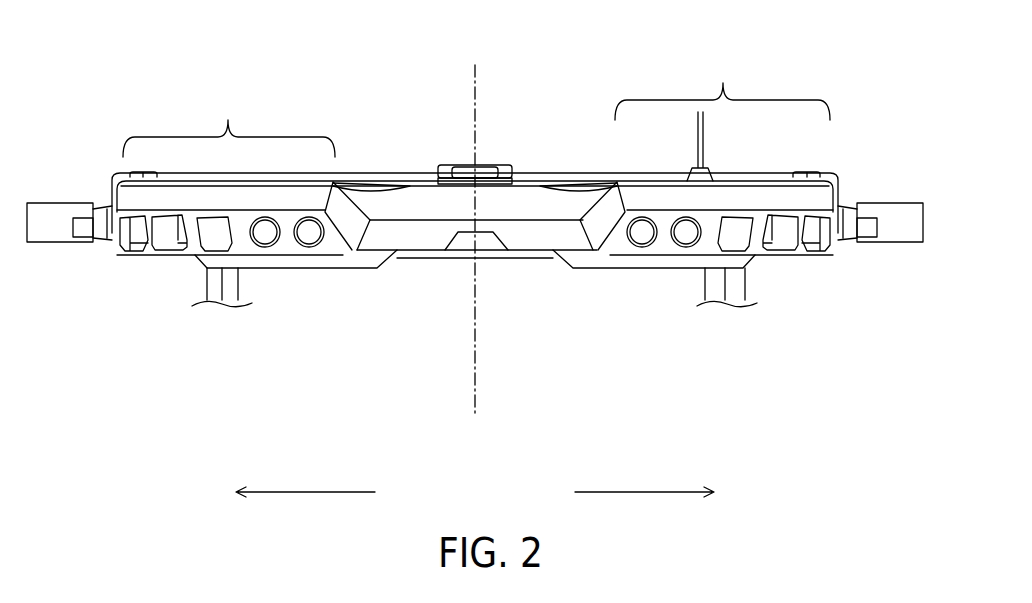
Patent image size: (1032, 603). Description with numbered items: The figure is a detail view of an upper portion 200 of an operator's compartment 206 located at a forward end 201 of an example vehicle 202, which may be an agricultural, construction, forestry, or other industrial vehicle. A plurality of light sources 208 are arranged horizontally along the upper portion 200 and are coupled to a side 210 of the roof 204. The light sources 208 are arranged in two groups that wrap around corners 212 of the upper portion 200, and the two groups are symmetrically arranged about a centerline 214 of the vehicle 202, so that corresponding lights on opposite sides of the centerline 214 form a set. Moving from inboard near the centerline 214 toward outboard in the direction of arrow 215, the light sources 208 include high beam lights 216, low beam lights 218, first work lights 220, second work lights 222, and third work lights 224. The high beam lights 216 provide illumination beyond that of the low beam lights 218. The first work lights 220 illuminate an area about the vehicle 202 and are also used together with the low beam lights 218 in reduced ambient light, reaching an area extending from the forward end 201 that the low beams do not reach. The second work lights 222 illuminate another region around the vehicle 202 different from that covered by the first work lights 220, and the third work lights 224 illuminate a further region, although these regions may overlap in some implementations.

The upper portion 200 is at (535, 177).
The forward end 201 is at (205, 283).
The vehicle 202 is at (130, 113).
The roof 204 is at (410, 175).
The operator's compartment 206 is at (417, 335).
The light sources 208 is at (476, 115).
The side 210 is at (395, 200).
The corners 212 is at (110, 183).
The centerline 214 is at (478, 365).
The arrow 215 is at (310, 493).
The high beam lights 216 is at (310, 248).
The low beam lights 218 is at (268, 249).
The first work lights 220 is at (203, 256).
The second work lights 222 is at (163, 252).
The third work lights 224 is at (137, 255).